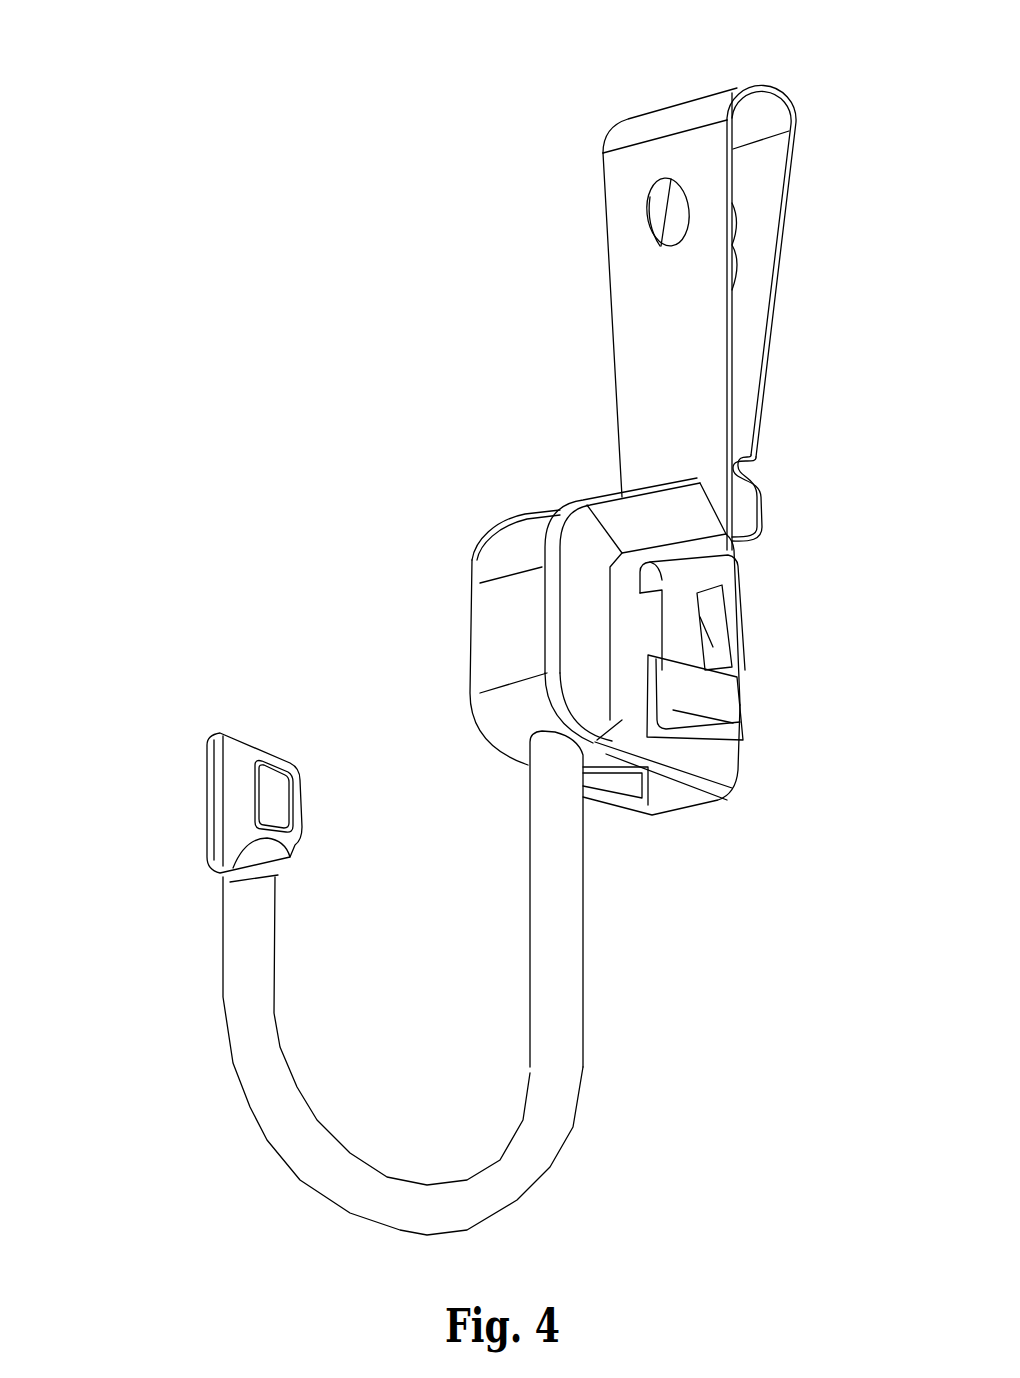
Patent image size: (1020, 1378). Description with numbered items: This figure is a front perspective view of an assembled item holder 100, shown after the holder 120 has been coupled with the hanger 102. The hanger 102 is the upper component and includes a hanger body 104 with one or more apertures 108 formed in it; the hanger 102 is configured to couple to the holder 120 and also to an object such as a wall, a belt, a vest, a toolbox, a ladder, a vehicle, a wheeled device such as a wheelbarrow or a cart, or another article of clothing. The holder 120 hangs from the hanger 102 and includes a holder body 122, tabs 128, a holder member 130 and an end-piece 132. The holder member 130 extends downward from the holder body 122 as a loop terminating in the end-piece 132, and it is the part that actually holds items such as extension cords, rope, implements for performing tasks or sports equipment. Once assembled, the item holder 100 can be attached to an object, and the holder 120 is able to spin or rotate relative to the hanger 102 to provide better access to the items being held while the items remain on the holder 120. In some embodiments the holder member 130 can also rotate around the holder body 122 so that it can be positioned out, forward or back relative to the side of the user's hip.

The item holder 100 is at (225, 127).
The hanger 102 is at (650, 92).
The hanger body 104 is at (797, 142).
The apertures 108 is at (690, 191).
The holder 120 is at (334, 546).
The holder body 122 is at (575, 500).
The tabs 128 is at (728, 717).
The holder member 130 is at (270, 1140).
The end-piece 132 is at (257, 740).